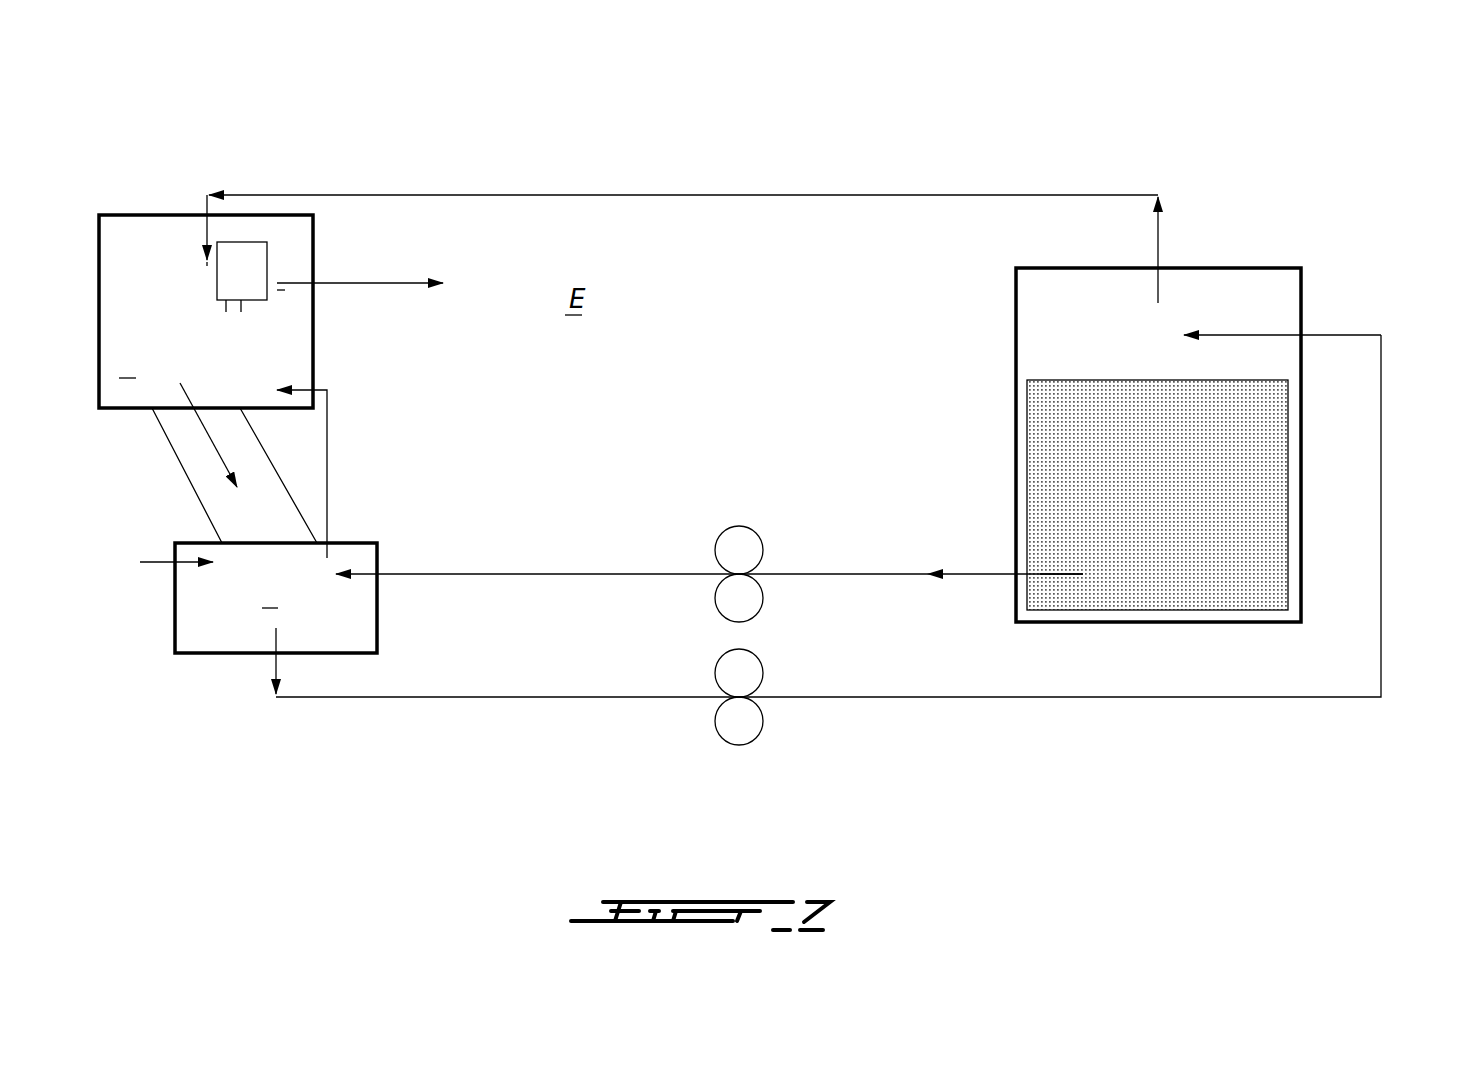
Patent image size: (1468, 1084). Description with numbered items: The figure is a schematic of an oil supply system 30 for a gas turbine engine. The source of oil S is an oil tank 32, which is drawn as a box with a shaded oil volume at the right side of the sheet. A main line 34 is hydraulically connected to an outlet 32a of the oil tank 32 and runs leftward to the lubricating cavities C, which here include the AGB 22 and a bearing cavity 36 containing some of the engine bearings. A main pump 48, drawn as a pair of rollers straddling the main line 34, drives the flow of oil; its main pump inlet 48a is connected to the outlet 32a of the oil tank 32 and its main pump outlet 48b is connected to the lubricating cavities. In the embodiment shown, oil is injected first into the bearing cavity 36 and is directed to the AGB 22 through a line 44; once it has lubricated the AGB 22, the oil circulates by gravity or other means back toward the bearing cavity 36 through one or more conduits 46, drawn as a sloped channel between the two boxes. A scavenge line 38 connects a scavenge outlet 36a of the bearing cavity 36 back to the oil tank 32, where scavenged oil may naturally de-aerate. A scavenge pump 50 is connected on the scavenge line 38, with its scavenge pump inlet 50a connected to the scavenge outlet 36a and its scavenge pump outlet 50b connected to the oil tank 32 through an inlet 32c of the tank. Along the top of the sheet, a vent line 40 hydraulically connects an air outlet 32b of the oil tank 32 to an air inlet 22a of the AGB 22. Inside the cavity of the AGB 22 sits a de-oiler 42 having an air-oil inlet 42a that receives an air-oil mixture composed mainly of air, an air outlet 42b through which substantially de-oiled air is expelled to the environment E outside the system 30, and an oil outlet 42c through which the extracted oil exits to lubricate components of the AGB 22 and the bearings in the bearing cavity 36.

The oil supply system 30 is at (1163, 130).
The AGB 22 is at (120, 213).
The air inlet 22a is at (195, 206).
The vent line 40 is at (685, 194).
The de-oiler 42 is at (268, 257).
The air-oil inlet 42a is at (208, 268).
The air outlet 42b is at (278, 290).
The oil outlet 42c is at (254, 306).
The line 44 is at (328, 463).
The conduits 46 is at (187, 477).
The bearing cavity 36 is at (195, 655).
The scavenge outlet 36a is at (260, 669).
The main line 34 is at (552, 573).
The scavenge line 38 is at (1002, 699).
The main pump 48 is at (757, 529).
The main pump inlet 48a is at (771, 559).
The main pump outlet 48b is at (713, 581).
The scavenge pump 50 is at (736, 731).
The scavenge pump inlet 50a is at (706, 706).
The scavenge pump outlet 50b is at (774, 681).
The oil tank 32 is at (1266, 267).
The outlet 32a is at (1002, 556).
The air outlet 32b is at (1164, 261).
The inlet 32c is at (1311, 344).